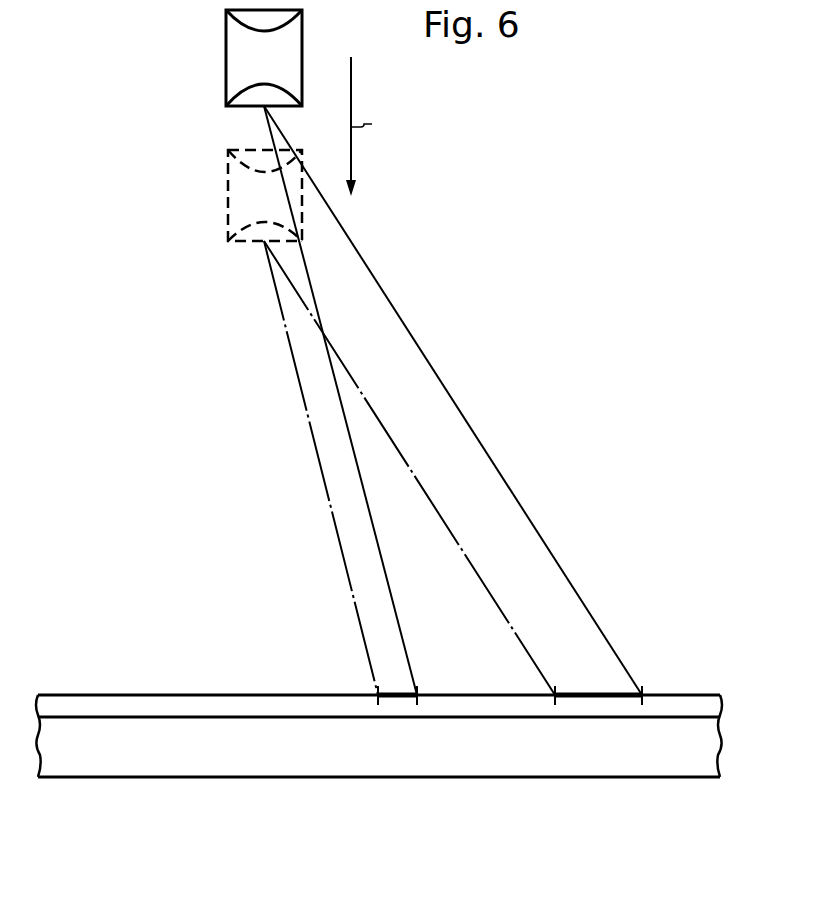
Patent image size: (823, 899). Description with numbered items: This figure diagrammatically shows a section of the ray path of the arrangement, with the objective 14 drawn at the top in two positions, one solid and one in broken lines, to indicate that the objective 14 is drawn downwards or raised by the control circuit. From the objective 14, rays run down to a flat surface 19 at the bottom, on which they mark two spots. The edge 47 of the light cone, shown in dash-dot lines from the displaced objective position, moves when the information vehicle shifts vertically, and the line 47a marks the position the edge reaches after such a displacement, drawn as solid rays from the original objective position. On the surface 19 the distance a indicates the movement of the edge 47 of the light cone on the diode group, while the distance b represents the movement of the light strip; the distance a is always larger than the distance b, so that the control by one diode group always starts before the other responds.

The objective 14 is at (228, 91).
The edge of the light cone 47 is at (395, 447).
The line of the displaced edge position 47a is at (428, 362).
The record carrier / plate surface 19 is at (178, 694).
The distance a is at (584, 694).
The distance b is at (395, 694).